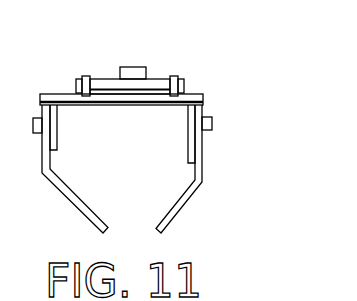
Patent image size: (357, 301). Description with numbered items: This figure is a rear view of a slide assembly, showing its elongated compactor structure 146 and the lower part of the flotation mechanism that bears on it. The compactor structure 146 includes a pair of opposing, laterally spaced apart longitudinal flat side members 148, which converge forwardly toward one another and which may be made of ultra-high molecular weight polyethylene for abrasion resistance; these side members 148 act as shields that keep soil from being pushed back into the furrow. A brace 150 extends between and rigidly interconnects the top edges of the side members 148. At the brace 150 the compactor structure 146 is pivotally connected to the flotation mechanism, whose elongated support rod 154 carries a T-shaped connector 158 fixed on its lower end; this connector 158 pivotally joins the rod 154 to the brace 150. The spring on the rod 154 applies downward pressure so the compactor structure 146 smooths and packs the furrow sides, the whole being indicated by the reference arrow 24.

The clamp assembly 24 is at (172, 125).
The compactor structure 146 is at (168, 169).
The longitudinal flat side members 148 is at (182, 200).
The brace 150 is at (193, 93).
The support rod 154 is at (133, 66).
The T-shaped connector 158 is at (157, 76).